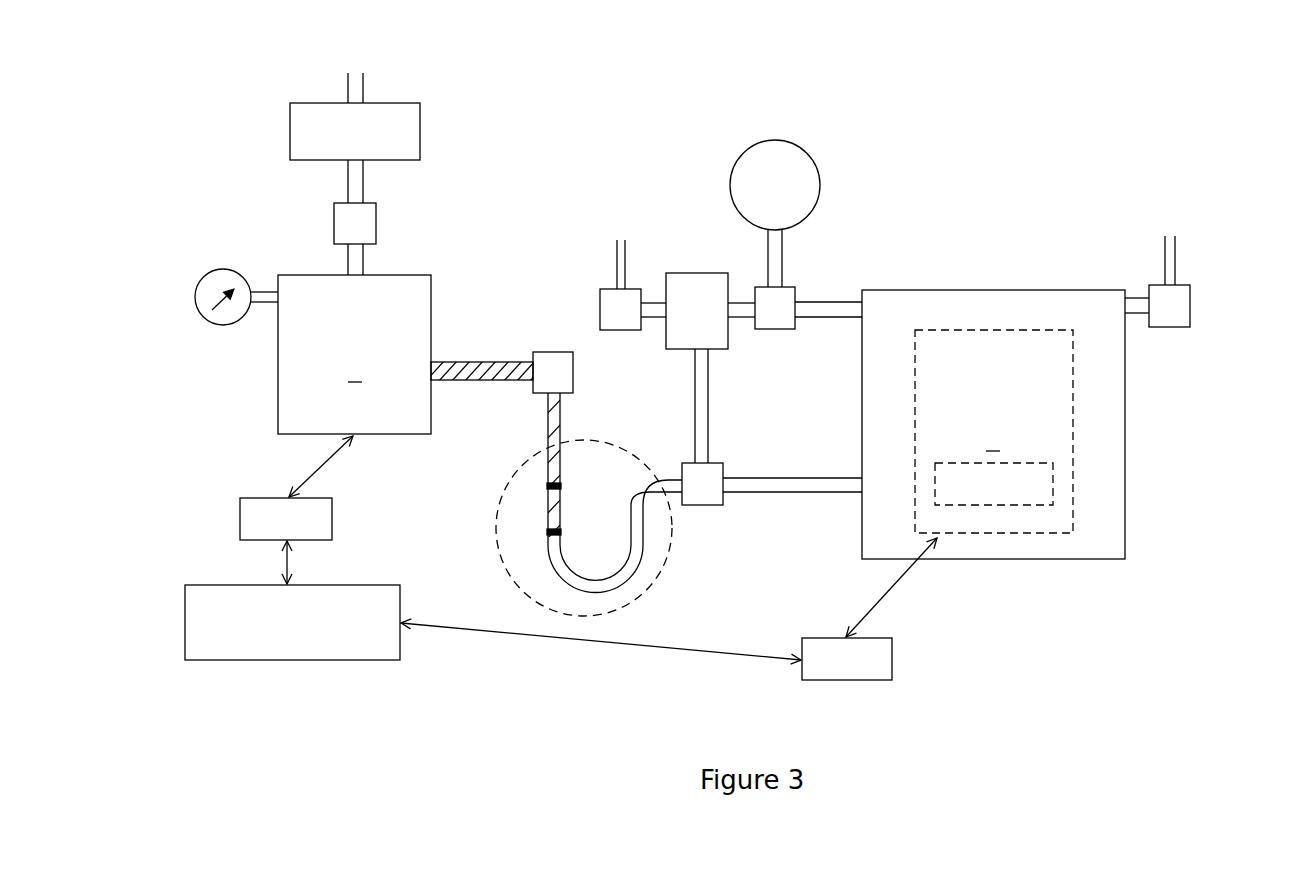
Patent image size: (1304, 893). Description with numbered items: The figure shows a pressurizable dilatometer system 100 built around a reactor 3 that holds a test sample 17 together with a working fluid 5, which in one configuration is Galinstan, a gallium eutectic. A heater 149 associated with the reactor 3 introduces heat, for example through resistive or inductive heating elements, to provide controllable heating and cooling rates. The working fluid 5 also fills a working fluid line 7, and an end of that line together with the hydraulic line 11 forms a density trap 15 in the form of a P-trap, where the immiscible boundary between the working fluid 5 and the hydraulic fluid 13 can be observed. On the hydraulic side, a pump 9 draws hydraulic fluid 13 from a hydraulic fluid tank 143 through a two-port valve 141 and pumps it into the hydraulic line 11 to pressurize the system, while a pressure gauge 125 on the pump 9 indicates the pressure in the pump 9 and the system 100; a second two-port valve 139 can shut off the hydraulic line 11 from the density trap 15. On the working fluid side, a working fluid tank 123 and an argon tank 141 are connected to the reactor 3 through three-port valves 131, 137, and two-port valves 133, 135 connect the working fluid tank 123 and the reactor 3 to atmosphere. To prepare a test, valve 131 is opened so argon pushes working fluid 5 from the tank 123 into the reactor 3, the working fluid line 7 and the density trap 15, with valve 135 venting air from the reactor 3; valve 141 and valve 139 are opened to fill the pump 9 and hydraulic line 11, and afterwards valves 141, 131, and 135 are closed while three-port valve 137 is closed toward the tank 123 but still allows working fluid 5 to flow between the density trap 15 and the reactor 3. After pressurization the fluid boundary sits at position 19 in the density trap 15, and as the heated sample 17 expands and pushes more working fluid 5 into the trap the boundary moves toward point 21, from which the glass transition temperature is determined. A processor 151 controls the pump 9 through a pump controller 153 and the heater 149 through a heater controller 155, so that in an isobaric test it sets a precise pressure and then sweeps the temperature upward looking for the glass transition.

The pressurizable dilatometer system 100 is at (848, 61).
The hydraulic fluid tank 143 is at (420, 135).
The argon tank 141 is at (376, 230).
The pressure gauge 125 is at (215, 271).
The pump 9 is at (354, 354).
The hydraulic line 11 is at (457, 361).
The two-port valve 139 is at (553, 351).
The hydraulic fluid 13 is at (556, 443).
The point 21 is at (546, 486).
The position 19 is at (546, 532).
The density trap 15 is at (648, 592).
The three-port valve 137 is at (693, 505).
The working fluid line 7 is at (771, 493).
The working fluid 5 is at (897, 420).
The reactor 3 is at (993, 424).
The heater 149 is at (1067, 535).
The sample 17 is at (993, 507).
The two-port valve 133 is at (597, 295).
The working fluid tank 123 is at (697, 272).
The three-port valve 131 is at (798, 293).
The two-port valve 135 is at (1193, 290).
The pump controller 153 is at (258, 497).
The processor 151 is at (493, 622).
The heater controller 155 is at (817, 637).